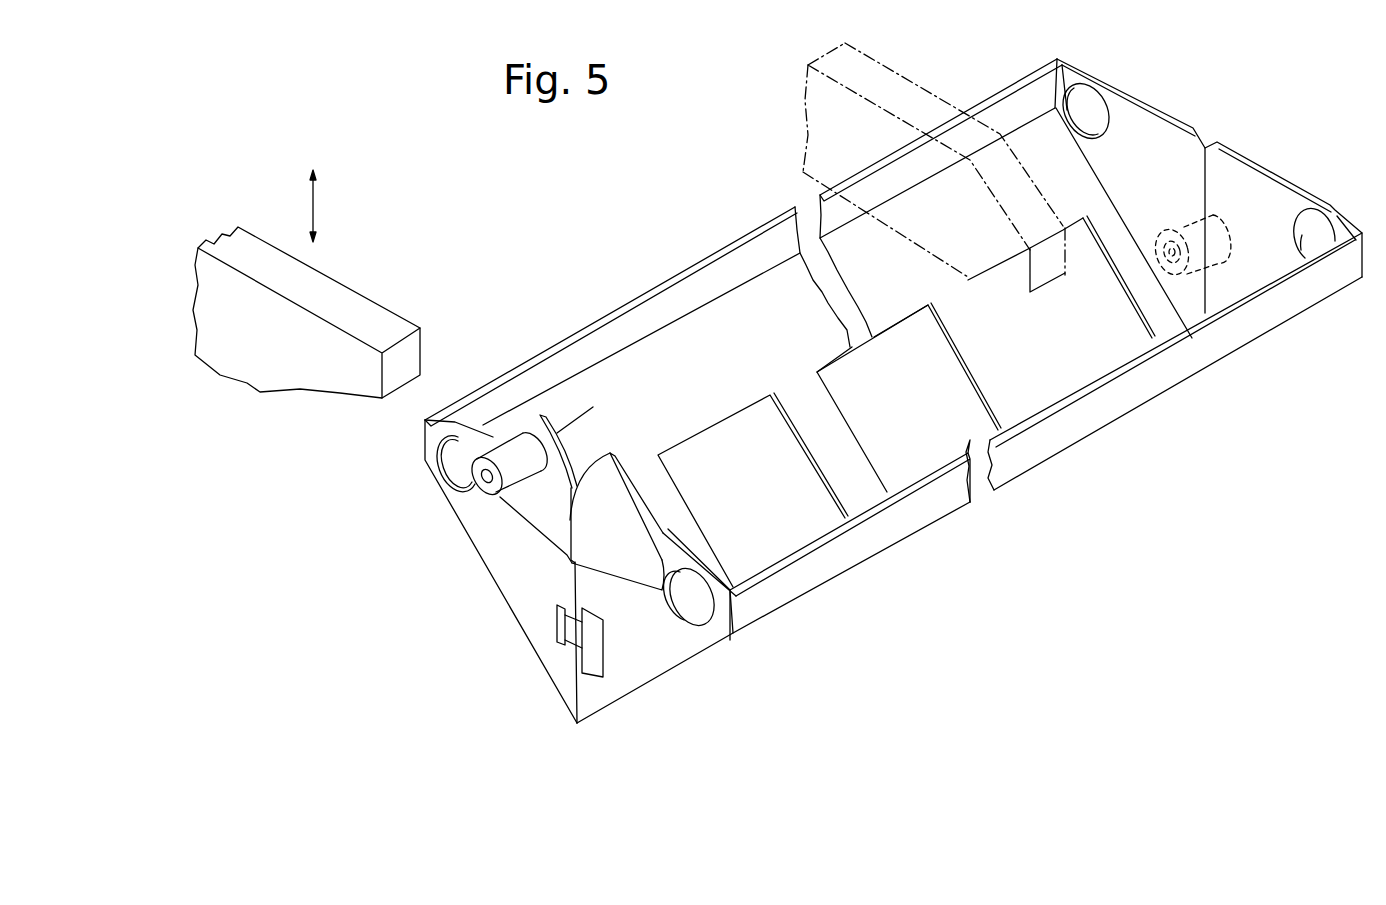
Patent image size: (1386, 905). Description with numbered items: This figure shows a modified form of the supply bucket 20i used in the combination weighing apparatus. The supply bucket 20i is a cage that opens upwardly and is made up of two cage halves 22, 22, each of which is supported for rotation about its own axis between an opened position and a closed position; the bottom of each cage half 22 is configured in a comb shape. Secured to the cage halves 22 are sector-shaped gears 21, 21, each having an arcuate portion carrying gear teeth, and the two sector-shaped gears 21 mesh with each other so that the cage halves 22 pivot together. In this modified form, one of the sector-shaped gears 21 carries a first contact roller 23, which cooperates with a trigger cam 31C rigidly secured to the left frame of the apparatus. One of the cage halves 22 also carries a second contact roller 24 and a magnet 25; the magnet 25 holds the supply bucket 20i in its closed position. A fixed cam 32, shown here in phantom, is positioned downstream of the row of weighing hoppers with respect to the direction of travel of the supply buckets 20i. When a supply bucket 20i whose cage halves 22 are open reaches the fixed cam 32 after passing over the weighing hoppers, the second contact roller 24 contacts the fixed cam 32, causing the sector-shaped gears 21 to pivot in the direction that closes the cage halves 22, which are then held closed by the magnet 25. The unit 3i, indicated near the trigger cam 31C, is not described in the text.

The unit 3i is at (348, 237).
The trigger cam 31C is at (360, 300).
The supply bucket 20i is at (887, 368).
The sector-shaped gear 21 is at (606, 478).
The cage half 22 is at (495, 568).
The first contact roller 23 is at (517, 440).
The second contact roller 24 is at (1193, 215).
The magnet 25 is at (575, 643).
The fixed cam 32 is at (845, 43).